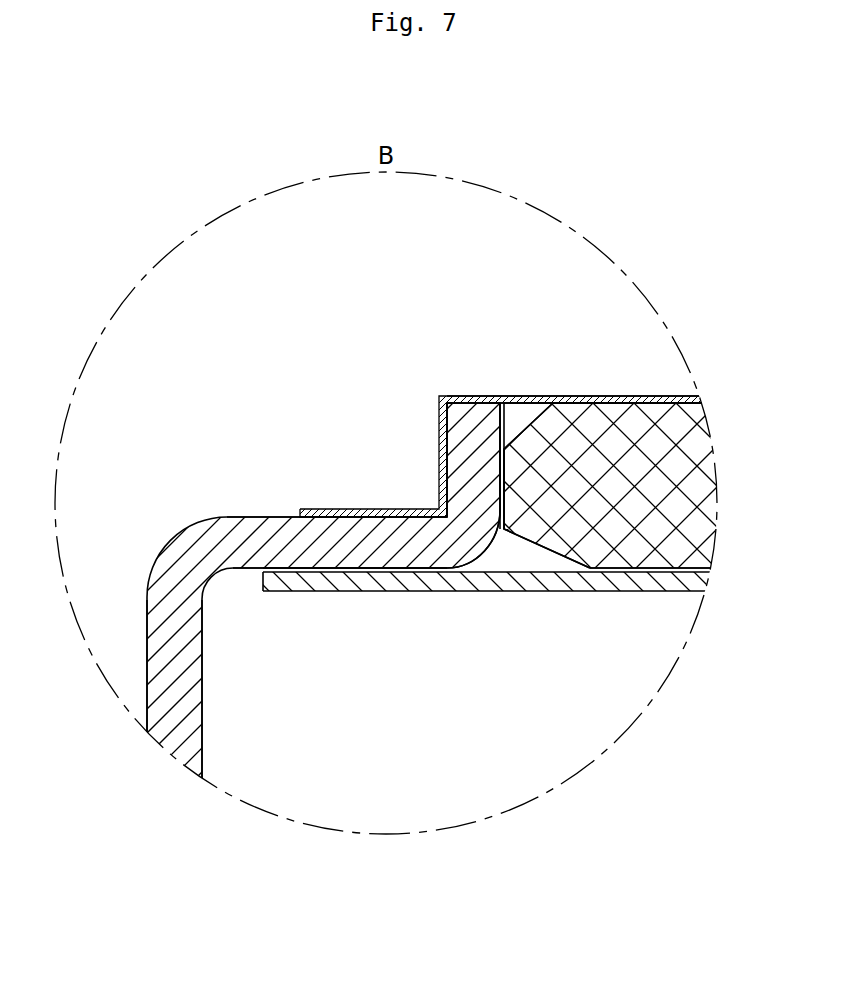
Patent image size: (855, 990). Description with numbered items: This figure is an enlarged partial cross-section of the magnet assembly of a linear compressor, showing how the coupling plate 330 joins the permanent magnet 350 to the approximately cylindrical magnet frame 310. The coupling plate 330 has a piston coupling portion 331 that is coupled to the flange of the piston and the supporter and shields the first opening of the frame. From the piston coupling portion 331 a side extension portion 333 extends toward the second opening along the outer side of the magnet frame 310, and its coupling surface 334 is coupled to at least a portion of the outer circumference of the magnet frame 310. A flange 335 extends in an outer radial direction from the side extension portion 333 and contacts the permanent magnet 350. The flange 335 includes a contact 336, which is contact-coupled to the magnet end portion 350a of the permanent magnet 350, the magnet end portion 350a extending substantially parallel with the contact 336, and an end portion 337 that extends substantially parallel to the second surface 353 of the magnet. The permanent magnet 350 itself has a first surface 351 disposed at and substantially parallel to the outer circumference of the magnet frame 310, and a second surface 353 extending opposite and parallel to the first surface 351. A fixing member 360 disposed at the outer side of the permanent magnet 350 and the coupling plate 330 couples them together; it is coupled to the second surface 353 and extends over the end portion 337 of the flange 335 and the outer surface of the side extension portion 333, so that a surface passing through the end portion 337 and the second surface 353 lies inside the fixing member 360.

The magnet frame 310 is at (297, 586).
The coupling plate 330 is at (175, 518).
The piston coupling portion 331 is at (157, 660).
The side extension portion 333 is at (270, 523).
The coupling surface 334 is at (345, 566).
The flange 335 is at (473, 432).
The contact 336 is at (504, 475).
The end portion 337 is at (478, 397).
The permanent magnet 350 is at (703, 498).
The magnet end portion 350a is at (504, 505).
The first surface 351 is at (613, 571).
The second surface 353 is at (615, 405).
The fixing member 360 is at (548, 396).